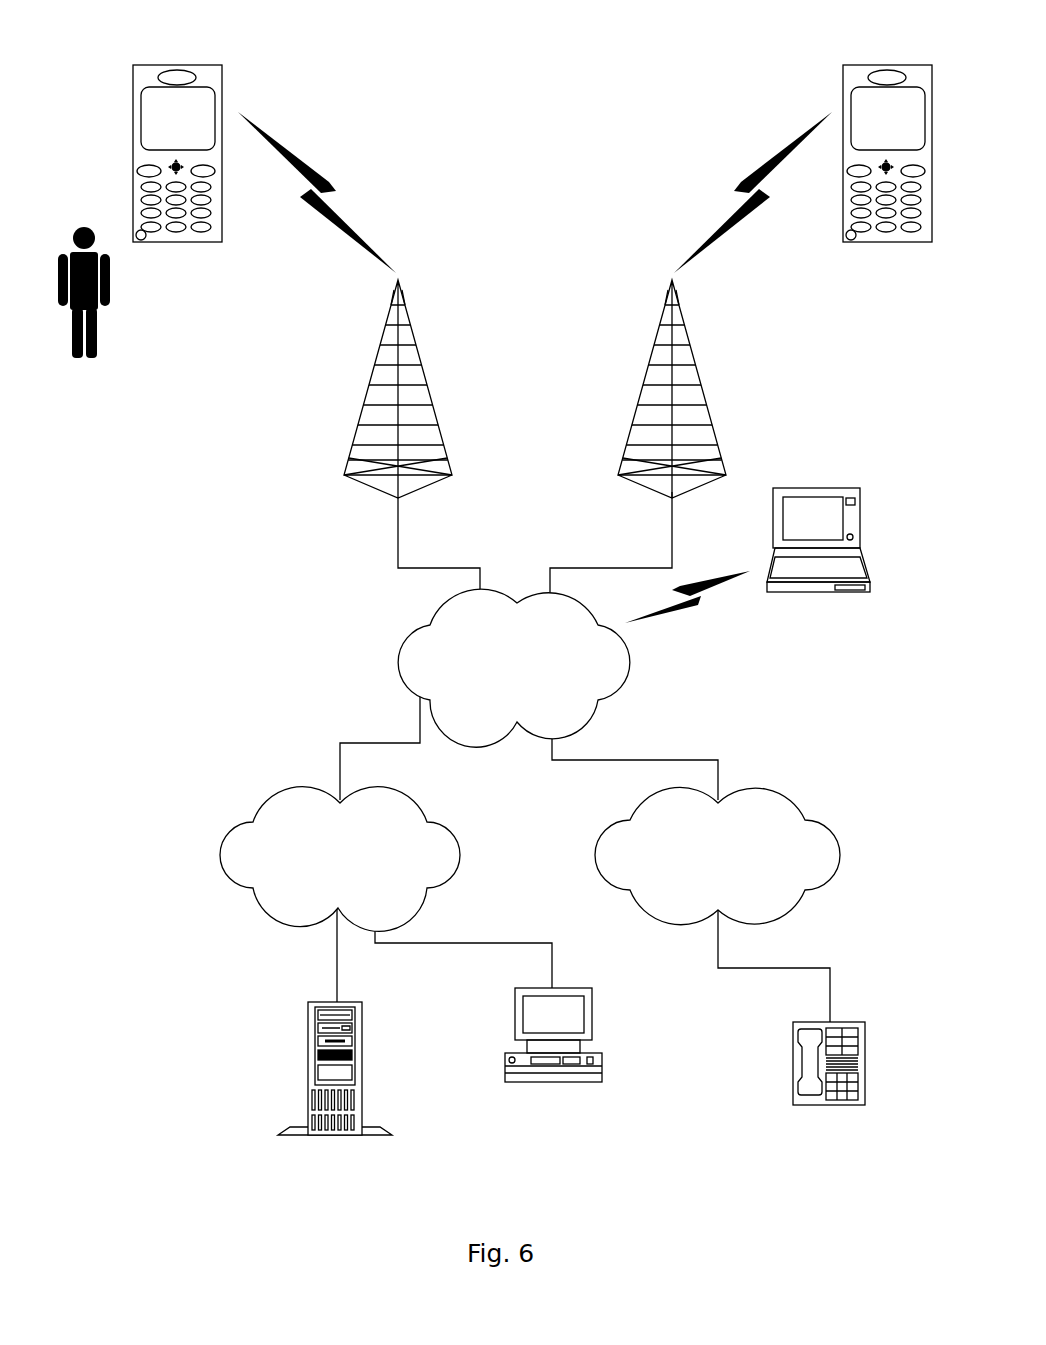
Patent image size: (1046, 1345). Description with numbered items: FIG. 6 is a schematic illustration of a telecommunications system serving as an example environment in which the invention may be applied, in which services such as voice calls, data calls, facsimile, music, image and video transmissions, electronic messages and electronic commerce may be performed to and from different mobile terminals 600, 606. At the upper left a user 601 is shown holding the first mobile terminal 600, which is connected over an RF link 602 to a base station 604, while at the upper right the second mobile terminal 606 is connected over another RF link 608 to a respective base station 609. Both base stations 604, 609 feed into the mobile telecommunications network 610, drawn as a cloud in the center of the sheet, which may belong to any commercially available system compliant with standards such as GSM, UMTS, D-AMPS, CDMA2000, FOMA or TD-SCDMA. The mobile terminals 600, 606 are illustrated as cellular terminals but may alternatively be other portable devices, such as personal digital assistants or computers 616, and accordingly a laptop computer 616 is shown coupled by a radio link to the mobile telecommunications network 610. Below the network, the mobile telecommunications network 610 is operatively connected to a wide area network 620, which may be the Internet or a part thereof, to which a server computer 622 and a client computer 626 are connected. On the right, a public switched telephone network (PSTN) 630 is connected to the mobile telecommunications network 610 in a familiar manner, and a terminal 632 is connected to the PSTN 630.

The mobile terminal 600 is at (137, 73).
The user 601 is at (100, 287).
The RF link 602 is at (313, 178).
The base station 604 is at (386, 358).
The mobile terminal 606 is at (853, 73).
The RF link 608 is at (758, 176).
The base station 609 is at (658, 358).
The mobile telecommunications network 610 is at (514, 668).
The computer 616 is at (780, 572).
The wide area network 620 is at (340, 859).
The server computer 622 is at (308, 1043).
The client computer 626 is at (535, 1020).
The public switched telephone network (PSTN) 630 is at (717, 855).
The terminal 632 is at (795, 1048).